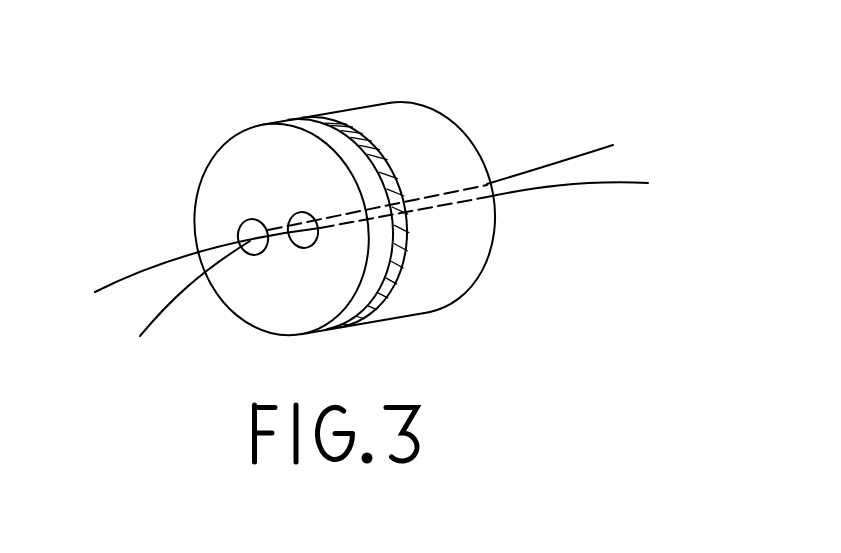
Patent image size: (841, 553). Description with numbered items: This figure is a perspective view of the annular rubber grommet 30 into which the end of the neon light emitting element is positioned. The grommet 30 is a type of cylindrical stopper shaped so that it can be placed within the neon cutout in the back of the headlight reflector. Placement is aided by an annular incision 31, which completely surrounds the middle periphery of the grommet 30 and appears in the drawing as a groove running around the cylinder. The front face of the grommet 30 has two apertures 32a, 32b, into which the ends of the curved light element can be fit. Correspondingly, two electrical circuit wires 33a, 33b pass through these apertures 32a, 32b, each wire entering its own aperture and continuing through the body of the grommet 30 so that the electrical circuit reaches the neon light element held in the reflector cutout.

The annular rubber grommet 30 is at (463, 94).
The annular incision 31 is at (390, 282).
The aperture 32a is at (243, 223).
The aperture 32b is at (300, 247).
The electrical circuit wire 33a is at (139, 274).
The electrical circuit wire 33b is at (154, 320).